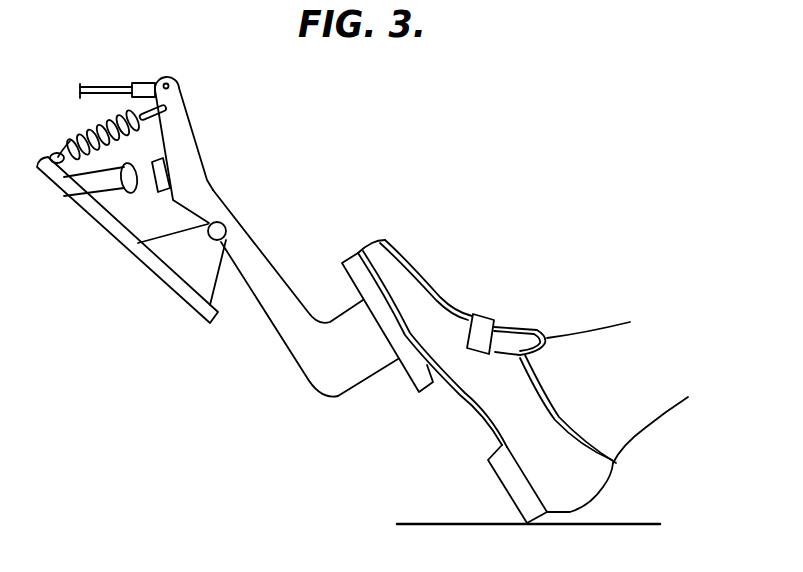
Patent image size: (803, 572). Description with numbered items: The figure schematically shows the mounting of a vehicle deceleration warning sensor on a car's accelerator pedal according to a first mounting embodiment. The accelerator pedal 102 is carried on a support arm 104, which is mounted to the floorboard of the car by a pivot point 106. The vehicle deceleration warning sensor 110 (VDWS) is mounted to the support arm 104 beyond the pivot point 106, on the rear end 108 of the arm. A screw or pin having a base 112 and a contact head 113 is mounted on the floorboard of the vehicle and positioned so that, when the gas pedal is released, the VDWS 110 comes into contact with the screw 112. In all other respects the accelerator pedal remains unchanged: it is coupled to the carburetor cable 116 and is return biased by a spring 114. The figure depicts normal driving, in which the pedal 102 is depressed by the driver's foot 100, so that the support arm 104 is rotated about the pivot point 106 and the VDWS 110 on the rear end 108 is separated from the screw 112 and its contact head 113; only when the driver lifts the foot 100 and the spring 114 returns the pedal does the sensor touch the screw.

The driver's foot 100 is at (425, 282).
The pedal 102 is at (418, 381).
The support arm 104 is at (267, 263).
The pivot point 106 is at (219, 221).
The rear end 108 is at (177, 118).
The vehicle deceleration warning sensor 110 is at (162, 172).
The screw 112 is at (98, 198).
The contact head 113 is at (128, 193).
The spring 114 is at (70, 142).
The carburetor cable 116 is at (106, 87).